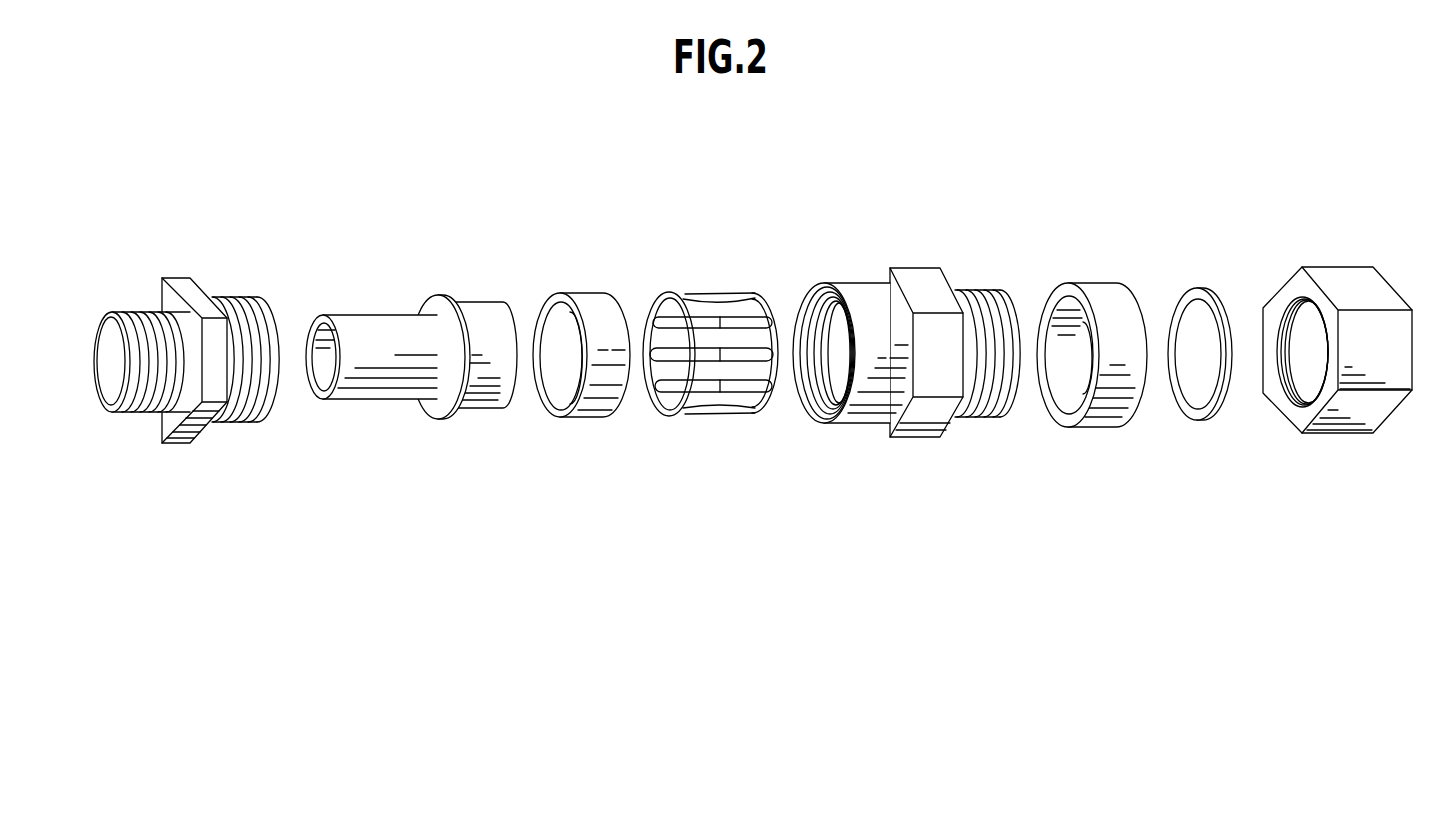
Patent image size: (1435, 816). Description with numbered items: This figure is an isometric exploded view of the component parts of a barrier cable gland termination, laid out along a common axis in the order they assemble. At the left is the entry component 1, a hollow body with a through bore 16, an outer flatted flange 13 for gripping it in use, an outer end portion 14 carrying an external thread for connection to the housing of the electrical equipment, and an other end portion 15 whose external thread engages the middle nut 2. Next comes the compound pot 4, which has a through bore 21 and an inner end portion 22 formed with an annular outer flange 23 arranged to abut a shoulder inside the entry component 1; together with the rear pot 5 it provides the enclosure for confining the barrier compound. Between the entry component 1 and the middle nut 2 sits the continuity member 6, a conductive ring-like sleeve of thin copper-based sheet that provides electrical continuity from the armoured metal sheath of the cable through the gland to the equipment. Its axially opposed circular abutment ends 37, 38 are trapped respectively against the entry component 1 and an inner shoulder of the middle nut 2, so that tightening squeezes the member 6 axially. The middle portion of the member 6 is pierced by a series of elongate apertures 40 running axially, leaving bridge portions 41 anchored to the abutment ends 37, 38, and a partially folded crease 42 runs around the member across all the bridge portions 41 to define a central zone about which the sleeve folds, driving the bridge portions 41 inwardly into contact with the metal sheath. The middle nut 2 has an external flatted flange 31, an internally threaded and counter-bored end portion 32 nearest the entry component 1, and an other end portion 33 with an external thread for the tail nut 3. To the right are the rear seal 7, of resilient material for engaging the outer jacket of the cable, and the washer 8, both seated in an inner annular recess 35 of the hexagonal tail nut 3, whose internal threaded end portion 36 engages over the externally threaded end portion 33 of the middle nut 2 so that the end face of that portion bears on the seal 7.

The entry component 1 is at (202, 238).
The outer flatted flange 13 is at (190, 287).
The outer end portion 14 is at (128, 310).
The other end portion 15 is at (257, 300).
The through bore 16 is at (117, 377).
The compound pot 4 is at (380, 284).
The through bore 21 is at (327, 360).
The inner end portion 22 is at (490, 397).
The annular outer flange 23 is at (433, 407).
The rear pot 5 is at (578, 280).
The continuity member 6 is at (707, 284).
The circular abutment end 37 is at (672, 408).
The circular abutment end 38 is at (767, 298).
The elongate apertures 40 is at (758, 387).
The bridge portions 41 is at (742, 303).
The partially folded crease 42 is at (720, 413).
The middle nut 2 is at (907, 259).
The external flatted flange 31 is at (920, 437).
The end portion 32 is at (862, 407).
The other end portion 33 is at (992, 417).
The rear seal 7 is at (1090, 272).
The washer 8 is at (1202, 274).
The tail nut 3 is at (1332, 259).
The inner annular recess 35 is at (1308, 370).
The internal threaded end portion 36 is at (1285, 313).